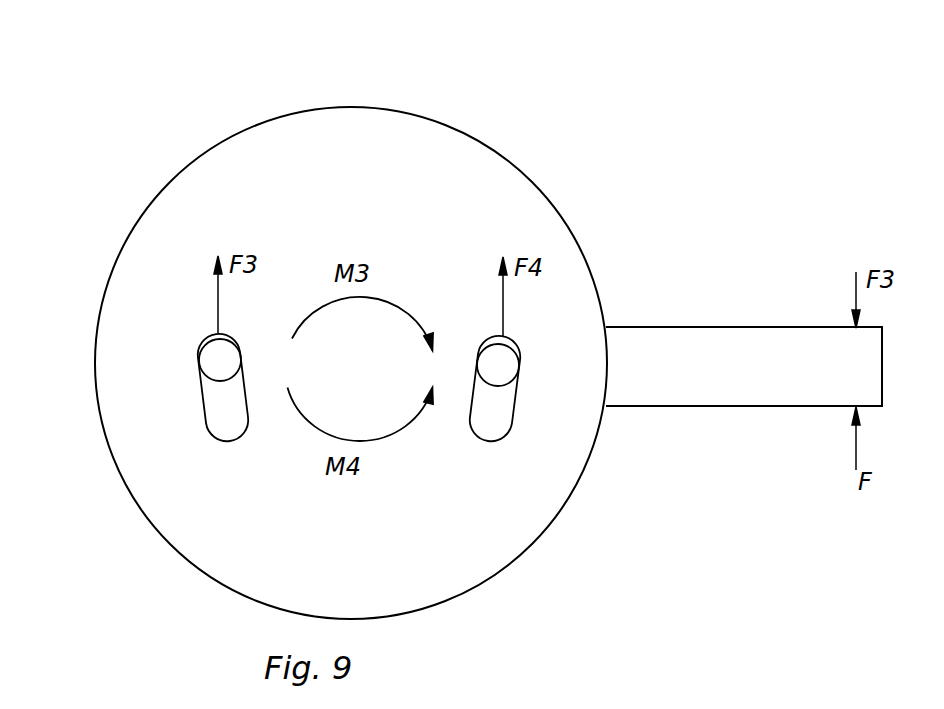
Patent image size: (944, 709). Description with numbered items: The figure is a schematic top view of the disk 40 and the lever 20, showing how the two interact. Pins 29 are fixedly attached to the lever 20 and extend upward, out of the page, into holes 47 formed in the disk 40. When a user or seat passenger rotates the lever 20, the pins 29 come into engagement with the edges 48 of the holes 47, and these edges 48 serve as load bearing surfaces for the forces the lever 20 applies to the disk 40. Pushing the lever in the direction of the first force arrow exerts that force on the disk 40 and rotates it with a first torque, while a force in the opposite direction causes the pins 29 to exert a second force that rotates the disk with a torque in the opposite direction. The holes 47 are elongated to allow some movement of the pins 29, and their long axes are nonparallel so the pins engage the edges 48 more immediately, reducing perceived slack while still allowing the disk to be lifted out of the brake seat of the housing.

The disk 40 is at (353, 130).
The lever 20 is at (692, 364).
The pins 29 is at (214, 363).
The holes 47 is at (221, 417).
The edges 48 is at (512, 425).